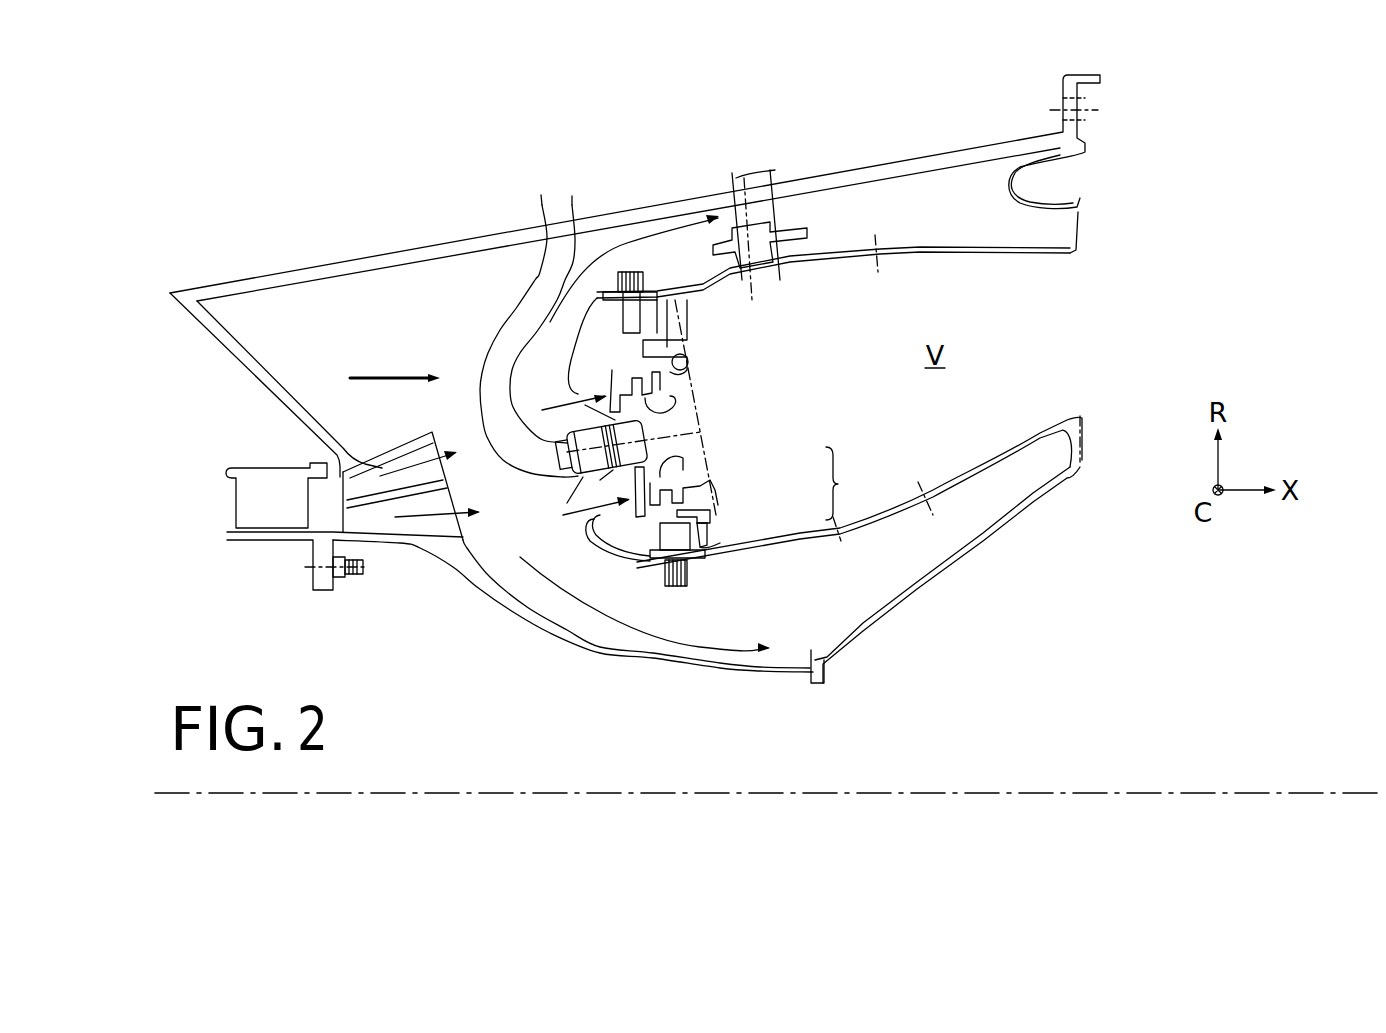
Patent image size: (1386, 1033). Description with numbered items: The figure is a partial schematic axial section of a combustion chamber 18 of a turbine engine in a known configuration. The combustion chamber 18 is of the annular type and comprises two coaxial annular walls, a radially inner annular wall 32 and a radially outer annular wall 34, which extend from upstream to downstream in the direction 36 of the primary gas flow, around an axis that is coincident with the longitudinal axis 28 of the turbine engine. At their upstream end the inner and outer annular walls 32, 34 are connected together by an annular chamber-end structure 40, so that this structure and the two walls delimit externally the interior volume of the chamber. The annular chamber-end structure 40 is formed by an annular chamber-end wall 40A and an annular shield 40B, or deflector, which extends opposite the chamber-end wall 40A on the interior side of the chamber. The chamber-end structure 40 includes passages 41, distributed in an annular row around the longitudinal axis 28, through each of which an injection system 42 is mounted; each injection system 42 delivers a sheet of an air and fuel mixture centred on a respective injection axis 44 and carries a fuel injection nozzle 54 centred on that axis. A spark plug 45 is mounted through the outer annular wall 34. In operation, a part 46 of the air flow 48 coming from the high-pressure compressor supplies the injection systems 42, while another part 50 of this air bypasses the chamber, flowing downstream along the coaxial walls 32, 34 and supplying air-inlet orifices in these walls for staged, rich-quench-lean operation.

The combustion chamber 18 is at (977, 219).
The longitudinal axis 28 is at (1313, 793).
The radially inner annular wall 32 is at (745, 555).
The radially outer annular wall 34 is at (720, 278).
The direction of the primary flow of gas 36 is at (397, 378).
The annular chamber-end structure 40 is at (847, 483).
The annular chamber-end wall 40A is at (710, 510).
The annular shield 40B is at (720, 540).
The passage 41 is at (688, 366).
The injection system 42 is at (592, 479).
The injection axis 44 is at (640, 443).
The spark plug 45 is at (777, 207).
The part of an air flow 46 is at (548, 408).
The air flow 48 is at (398, 470).
The another part of the air 50 is at (545, 268).
The fuel injection nozzle 54 is at (630, 434).